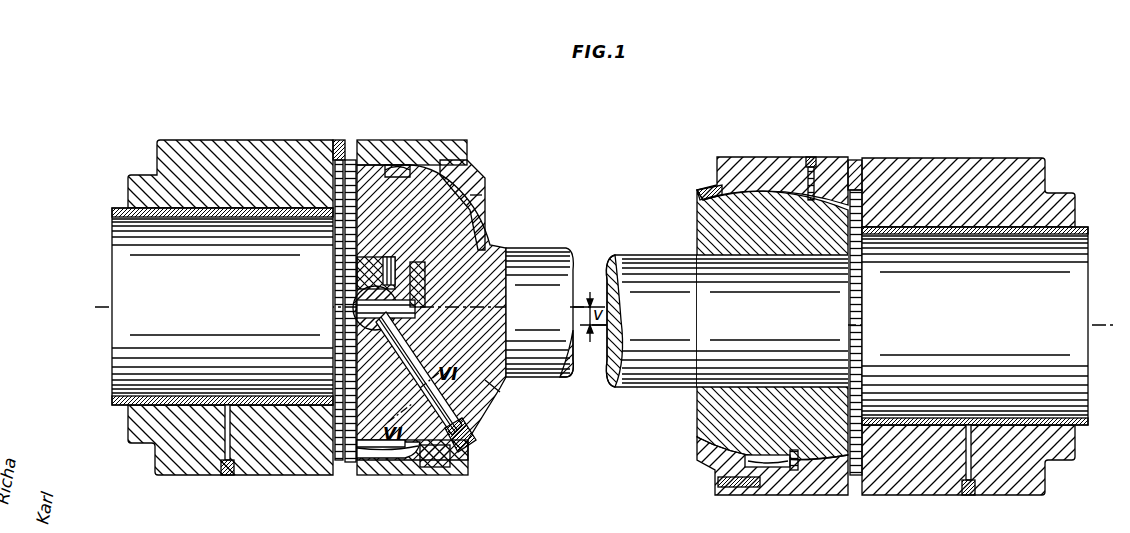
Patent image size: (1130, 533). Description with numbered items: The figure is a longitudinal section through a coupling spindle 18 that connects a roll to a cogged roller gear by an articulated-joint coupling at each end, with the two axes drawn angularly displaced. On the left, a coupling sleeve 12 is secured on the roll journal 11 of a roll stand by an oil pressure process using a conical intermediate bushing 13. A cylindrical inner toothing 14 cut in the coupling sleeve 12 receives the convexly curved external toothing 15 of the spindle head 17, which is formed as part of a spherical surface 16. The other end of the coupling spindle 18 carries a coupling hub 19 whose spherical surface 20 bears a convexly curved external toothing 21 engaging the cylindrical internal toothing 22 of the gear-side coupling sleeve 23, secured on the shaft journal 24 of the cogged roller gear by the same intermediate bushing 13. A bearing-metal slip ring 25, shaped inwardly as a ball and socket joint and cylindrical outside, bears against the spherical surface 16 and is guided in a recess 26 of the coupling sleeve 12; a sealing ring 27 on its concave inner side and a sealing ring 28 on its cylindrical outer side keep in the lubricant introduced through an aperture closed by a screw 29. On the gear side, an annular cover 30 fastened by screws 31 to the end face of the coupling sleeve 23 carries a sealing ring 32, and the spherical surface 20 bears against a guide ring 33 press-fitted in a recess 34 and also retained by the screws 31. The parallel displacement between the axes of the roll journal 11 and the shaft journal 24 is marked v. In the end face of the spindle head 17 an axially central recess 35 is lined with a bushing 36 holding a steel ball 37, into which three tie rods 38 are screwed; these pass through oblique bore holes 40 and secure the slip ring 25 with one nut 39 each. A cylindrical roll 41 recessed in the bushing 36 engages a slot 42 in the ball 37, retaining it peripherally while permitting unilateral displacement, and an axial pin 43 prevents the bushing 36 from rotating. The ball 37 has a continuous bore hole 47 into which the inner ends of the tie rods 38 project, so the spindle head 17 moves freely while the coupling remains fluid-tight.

The roll journal 11 is at (112, 262).
The coupling sleeve 12 is at (262, 466).
The conical intermediate bushing 13 is at (128, 408).
The cylindrical inner toothing 14 is at (388, 466).
The convexly curved external toothing 15 is at (358, 466).
The spherical surface 16 is at (492, 396).
The spindle head 17 is at (520, 250).
The coupling spindle 18 is at (612, 256).
The coupling hub 19 is at (697, 232).
The spherical surface 20 is at (840, 478).
The convexly curved external toothing 21 is at (775, 470).
The cylindrical internal toothing 22 is at (794, 472).
The coupling sleeve 23 is at (980, 162).
The shaft journal 24 is at (1078, 295).
The slip ring 25 is at (478, 176).
The recess 26 is at (440, 163).
The sealing ring 27 is at (482, 195).
The sealing ring 28 is at (405, 162).
The screw 29 is at (338, 140).
The annular cover 30 is at (717, 162).
The screws 31 is at (718, 484).
The sealing ring 32 is at (700, 196).
The guide ring 33 is at (866, 200).
The recess 34 is at (853, 170).
The recess 35 is at (431, 312).
The bushing 36 is at (425, 290).
The ball 37 is at (357, 316).
The tie rods 38 is at (412, 350).
The nut 39 is at (470, 438).
The oblique bore holes 40 is at (428, 468).
The cylindrical roll 41 is at (388, 258).
The slot 42 is at (357, 275).
The axial pin 43 is at (392, 355).
The continuous bore hole 47 is at (357, 302).